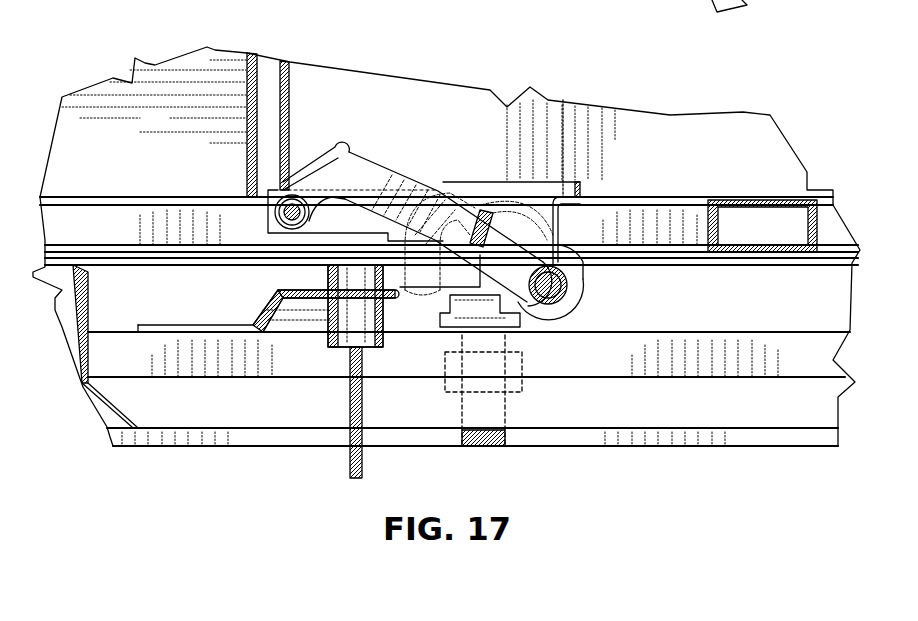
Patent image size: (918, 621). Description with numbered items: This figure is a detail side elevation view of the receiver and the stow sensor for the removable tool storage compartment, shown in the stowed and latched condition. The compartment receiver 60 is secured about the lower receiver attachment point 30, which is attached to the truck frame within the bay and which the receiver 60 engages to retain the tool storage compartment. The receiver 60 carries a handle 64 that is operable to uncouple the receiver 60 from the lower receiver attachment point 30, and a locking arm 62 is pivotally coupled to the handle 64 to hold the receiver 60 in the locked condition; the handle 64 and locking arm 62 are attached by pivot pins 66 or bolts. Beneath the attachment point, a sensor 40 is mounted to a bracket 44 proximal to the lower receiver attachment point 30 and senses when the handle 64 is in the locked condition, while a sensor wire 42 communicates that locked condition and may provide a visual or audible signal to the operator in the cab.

The lower receiver attachment point 30 is at (522, 322).
The sensor 40 is at (328, 277).
The sensor wire 42 is at (364, 462).
The bracket 44 is at (270, 305).
The compartment receiver 60 is at (500, 195).
The locking arm 62 is at (343, 210).
The handle 64 is at (386, 186).
The pivot pins 66 is at (278, 185).